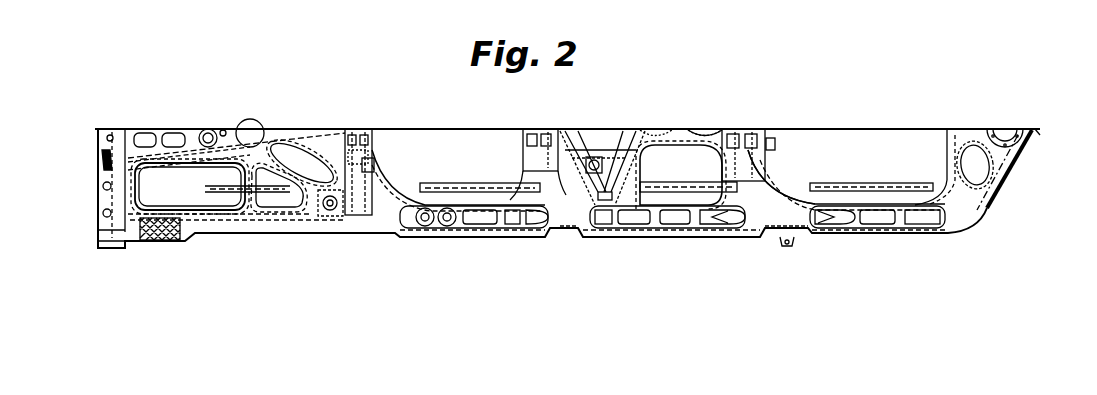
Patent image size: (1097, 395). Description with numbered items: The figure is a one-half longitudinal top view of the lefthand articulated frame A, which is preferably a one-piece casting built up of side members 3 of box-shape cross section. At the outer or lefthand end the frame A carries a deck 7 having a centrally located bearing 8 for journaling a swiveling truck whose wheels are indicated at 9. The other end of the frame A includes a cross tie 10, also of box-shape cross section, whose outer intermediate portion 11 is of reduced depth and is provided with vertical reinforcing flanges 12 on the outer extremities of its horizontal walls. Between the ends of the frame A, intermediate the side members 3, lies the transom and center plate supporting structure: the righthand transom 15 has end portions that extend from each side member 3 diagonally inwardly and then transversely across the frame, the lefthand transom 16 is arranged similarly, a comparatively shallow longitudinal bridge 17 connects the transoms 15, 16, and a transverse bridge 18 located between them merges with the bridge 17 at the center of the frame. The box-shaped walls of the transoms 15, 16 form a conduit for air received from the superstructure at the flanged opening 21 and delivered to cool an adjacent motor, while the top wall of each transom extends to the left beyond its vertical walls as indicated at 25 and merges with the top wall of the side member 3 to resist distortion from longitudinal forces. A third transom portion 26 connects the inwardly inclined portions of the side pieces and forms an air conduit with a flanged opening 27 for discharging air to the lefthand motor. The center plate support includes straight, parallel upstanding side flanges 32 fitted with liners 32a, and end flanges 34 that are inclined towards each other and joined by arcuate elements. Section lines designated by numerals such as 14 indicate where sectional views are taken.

The side members 3 is at (570, 226).
The deck 7 is at (316, 129).
The bearing 8 is at (248, 131).
The wheels 9 is at (662, 178).
The cross tie 10 is at (1003, 183).
The outer intermediate portion 11 is at (1008, 140).
The vertical reinforcing flanges 12 is at (531, 111).
The section line 14- 14 is at (593, 112).
The righthand transom 15 is at (573, 120).
The lefthand transom 16 is at (547, 163).
The longitudinal bridge 17 is at (672, 130).
The transverse bridge 18 is at (655, 158).
The flanged opening 21 is at (528, 133).
The top wall extension 25 is at (500, 183).
The third transom portion 26 is at (376, 165).
The flanged opening 27 is at (363, 140).
The side flanges 32 is at (600, 150).
The liners 32a is at (622, 135).
The end flanges 34 is at (585, 150).
The frame A is at (428, 238).